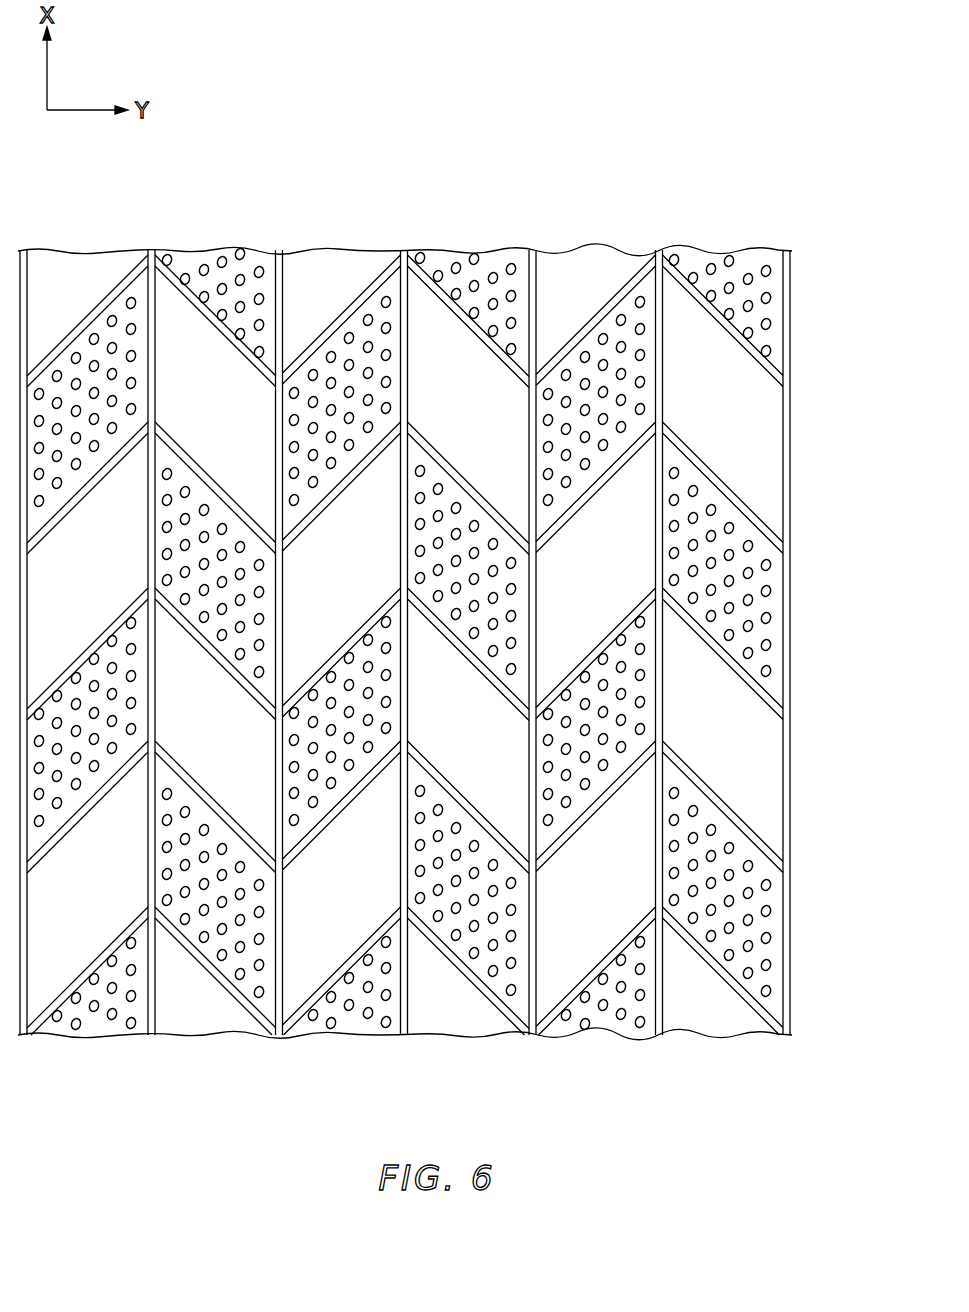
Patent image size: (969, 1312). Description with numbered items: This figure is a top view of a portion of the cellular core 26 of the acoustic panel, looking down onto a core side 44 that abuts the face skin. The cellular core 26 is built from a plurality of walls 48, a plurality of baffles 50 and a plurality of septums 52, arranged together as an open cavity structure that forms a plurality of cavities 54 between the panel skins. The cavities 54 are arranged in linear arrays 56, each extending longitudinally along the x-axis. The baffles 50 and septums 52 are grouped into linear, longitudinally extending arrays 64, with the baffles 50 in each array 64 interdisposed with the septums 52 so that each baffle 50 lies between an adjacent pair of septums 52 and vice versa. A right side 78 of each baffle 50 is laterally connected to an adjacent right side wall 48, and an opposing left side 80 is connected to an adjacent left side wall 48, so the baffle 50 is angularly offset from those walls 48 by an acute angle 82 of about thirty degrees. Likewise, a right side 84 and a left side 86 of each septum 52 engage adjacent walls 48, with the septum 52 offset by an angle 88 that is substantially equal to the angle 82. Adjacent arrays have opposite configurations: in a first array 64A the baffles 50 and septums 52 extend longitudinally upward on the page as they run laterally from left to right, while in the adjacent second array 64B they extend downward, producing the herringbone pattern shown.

The cellular core 26 is at (481, 130).
The core side 44 is at (787, 553).
The walls 48 is at (535, 250).
The baffles 50 is at (767, 448).
The septums 52 is at (790, 650).
The cavities 54 is at (303, 309).
The linear arrays 56 is at (455, 205).
The arrays 64 is at (100, 240).
The first array 64A is at (93, 1056).
The second array 64B is at (197, 1061).
The right side of baffle 78 is at (400, 870).
The left side of baffle 80 is at (267, 890).
The angle 82 is at (392, 904).
The right side of septum 84 is at (398, 637).
The left side of septum 86 is at (273, 738).
The angle 88 is at (379, 789).